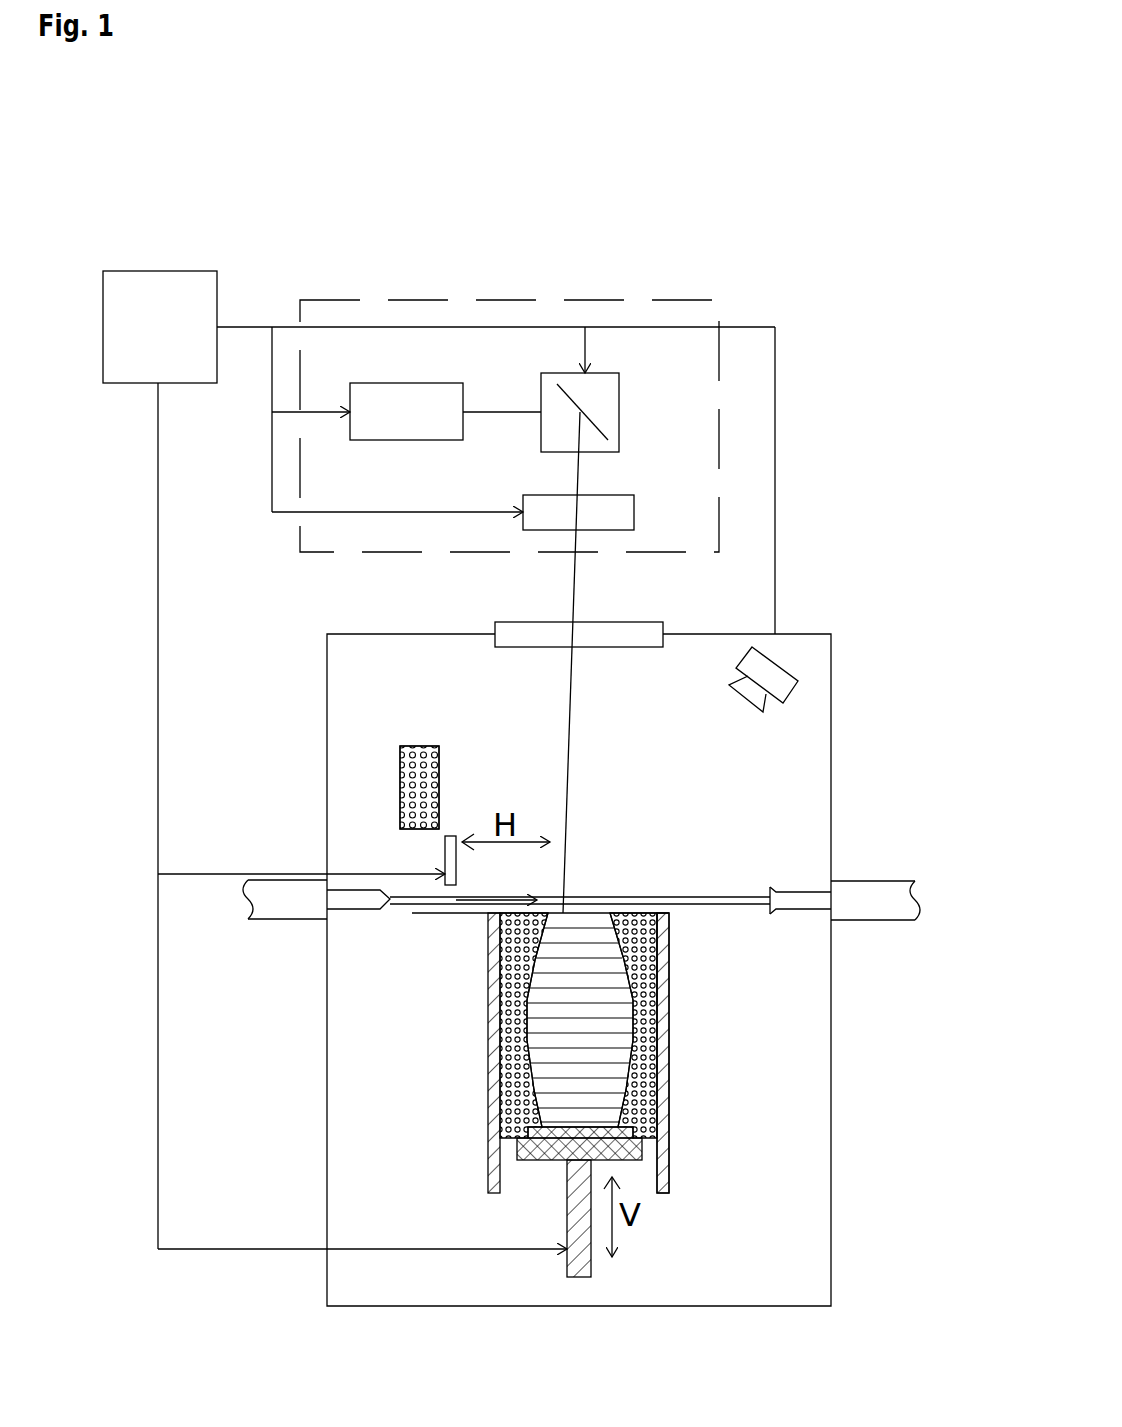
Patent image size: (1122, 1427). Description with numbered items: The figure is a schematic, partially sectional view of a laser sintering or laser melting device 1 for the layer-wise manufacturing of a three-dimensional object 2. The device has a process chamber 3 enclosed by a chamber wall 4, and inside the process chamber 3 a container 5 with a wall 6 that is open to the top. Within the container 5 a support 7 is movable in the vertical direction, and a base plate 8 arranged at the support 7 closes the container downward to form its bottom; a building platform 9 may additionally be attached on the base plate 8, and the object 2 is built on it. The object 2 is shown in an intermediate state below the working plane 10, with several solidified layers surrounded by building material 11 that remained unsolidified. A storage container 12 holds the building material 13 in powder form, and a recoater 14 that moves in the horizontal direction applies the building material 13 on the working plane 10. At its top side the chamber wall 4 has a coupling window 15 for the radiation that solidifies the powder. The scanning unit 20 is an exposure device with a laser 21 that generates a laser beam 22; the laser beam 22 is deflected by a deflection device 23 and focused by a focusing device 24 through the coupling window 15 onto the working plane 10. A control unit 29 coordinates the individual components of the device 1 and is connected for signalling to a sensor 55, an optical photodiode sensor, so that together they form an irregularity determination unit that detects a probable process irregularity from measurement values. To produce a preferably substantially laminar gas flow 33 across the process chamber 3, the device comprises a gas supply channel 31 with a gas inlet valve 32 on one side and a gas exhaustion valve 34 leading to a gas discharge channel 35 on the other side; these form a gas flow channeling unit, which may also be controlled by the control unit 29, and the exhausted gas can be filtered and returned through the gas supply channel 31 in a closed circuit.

The laser sintering device 1 is at (852, 179).
The object 2 is at (600, 965).
The process chamber 3 is at (438, 660).
The chamber wall 4 is at (372, 632).
The container 5 is at (672, 1108).
The wall 6 is at (669, 1052).
The support 7 is at (557, 1165).
The base plate 8 is at (515, 1150).
The building platform 9 is at (528, 1132).
The working plane 10 is at (645, 912).
The building material 11 is at (505, 955).
The storage container 12 is at (418, 746).
The building material 13 is at (438, 790).
The recoater 14 is at (447, 853).
The coupling window 15 is at (612, 632).
The scanning unit 20 is at (723, 412).
The laser 21 is at (406, 434).
The laser beam 22 is at (481, 412).
The deflection device 23 is at (608, 384).
The focusing device 24 is at (606, 507).
The control unit 29 is at (439, 760).
The gas supply channel 31 is at (262, 905).
The gas inlet valve 32 is at (370, 900).
The gas flow 33 is at (603, 896).
The gas exhaustion valve 34 is at (785, 900).
The gas discharge channel 35 is at (888, 900).
The sensor 55 is at (770, 680).